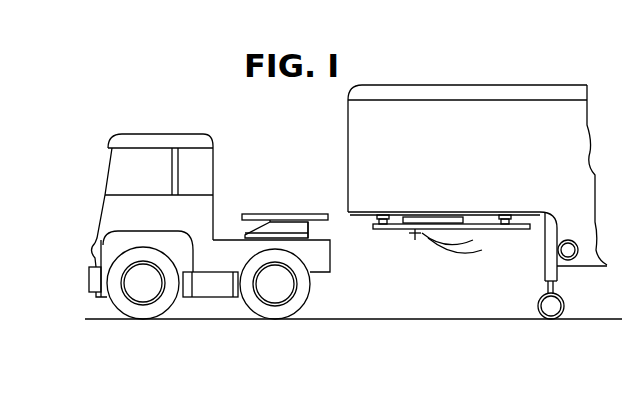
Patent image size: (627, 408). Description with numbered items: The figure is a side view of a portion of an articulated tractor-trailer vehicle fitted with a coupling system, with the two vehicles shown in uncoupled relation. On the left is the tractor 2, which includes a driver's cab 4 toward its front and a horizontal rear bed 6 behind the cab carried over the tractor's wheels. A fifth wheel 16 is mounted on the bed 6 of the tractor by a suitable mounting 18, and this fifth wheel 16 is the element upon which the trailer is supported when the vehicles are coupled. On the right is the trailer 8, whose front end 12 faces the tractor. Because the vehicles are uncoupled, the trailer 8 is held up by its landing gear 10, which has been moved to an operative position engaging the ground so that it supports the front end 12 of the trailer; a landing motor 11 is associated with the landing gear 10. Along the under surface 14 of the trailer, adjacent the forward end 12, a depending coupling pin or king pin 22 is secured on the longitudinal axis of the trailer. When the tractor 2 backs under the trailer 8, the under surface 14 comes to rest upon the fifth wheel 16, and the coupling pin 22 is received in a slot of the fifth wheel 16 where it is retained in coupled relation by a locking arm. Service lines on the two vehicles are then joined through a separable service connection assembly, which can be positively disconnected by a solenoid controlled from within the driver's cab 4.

The tractor 2 is at (214, 173).
The driver's cab 4 is at (150, 155).
The horizontal rear bed 6 is at (218, 262).
The trailer 8 is at (491, 86).
The landing gear 10 is at (560, 273).
The landing motor 11 is at (577, 246).
The front end 12 is at (547, 160).
The under surface 14 is at (485, 217).
The fifth wheel 16 is at (295, 213).
The mounting 18 is at (310, 231).
The coupling pin 22 is at (383, 230).